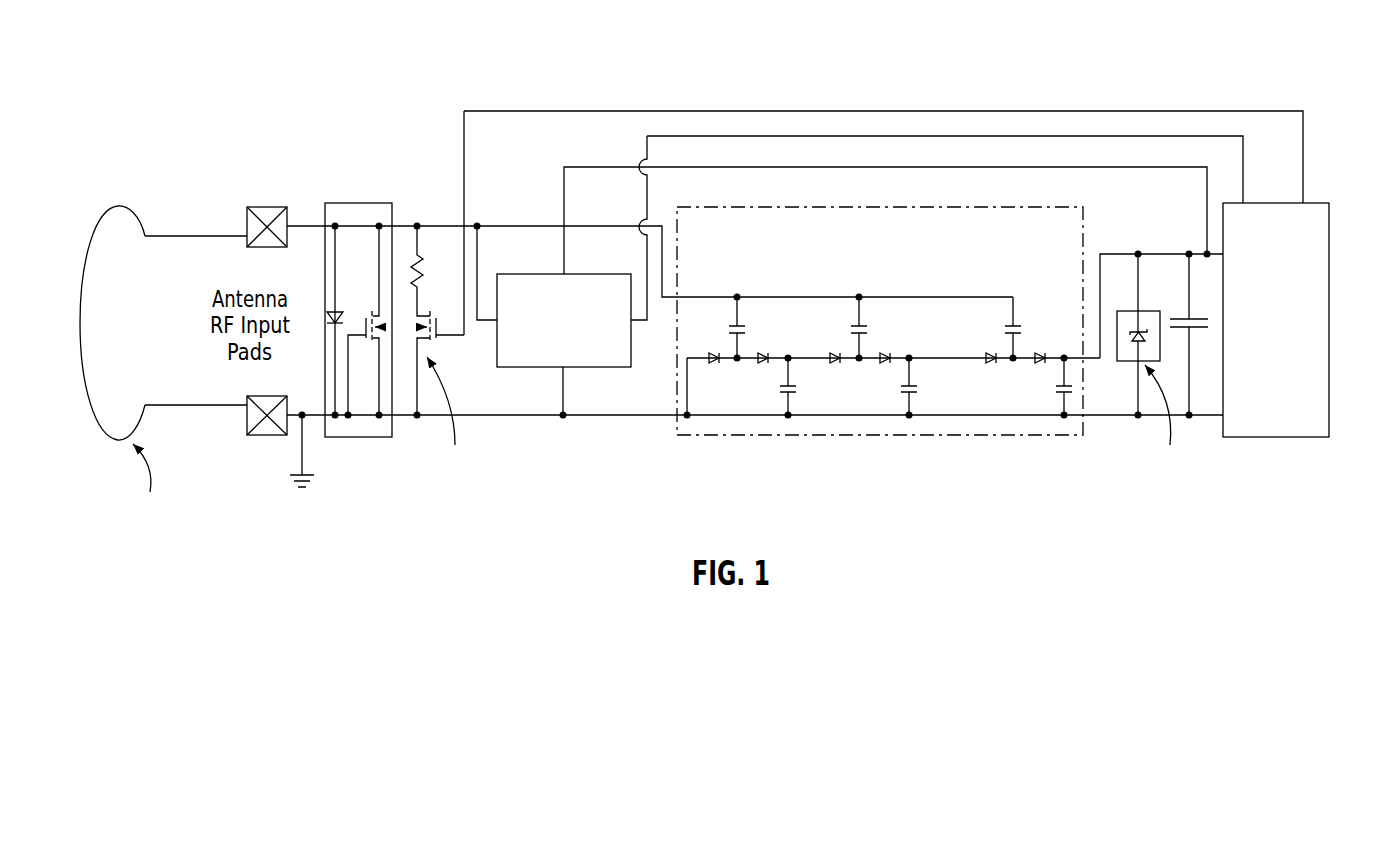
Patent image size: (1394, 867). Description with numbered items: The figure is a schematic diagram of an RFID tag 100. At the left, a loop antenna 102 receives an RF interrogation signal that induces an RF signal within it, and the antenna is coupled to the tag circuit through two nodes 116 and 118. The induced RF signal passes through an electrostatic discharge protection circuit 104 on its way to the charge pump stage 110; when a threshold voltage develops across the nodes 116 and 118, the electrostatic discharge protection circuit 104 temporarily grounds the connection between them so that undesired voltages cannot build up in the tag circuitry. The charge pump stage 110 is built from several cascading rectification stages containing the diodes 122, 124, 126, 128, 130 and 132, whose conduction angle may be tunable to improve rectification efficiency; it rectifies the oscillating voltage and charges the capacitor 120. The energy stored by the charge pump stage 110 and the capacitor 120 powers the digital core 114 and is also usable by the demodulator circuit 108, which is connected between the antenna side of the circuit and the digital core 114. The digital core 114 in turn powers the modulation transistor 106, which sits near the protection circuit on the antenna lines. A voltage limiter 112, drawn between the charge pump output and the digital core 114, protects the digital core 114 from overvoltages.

The RFID tag 100 is at (1218, 35).
The loop antenna 102 is at (196, 170).
The electrostatic discharge protection circuit 104 is at (328, 139).
The modulation transistor 106 is at (433, 345).
The demodulator circuit 108 is at (556, 270).
The charge pump stage 110 is at (858, 200).
The voltage limiter 112 is at (1132, 362).
The digital core 114 is at (1310, 197).
The node 116 is at (253, 254).
The node 118 is at (262, 392).
The capacitor 120 is at (1197, 328).
The diode 122 is at (713, 367).
The diode 124 is at (760, 367).
The diode 126 is at (835, 367).
The diode 128 is at (886, 367).
The diode 130 is at (990, 367).
The diode 132 is at (1040, 367).